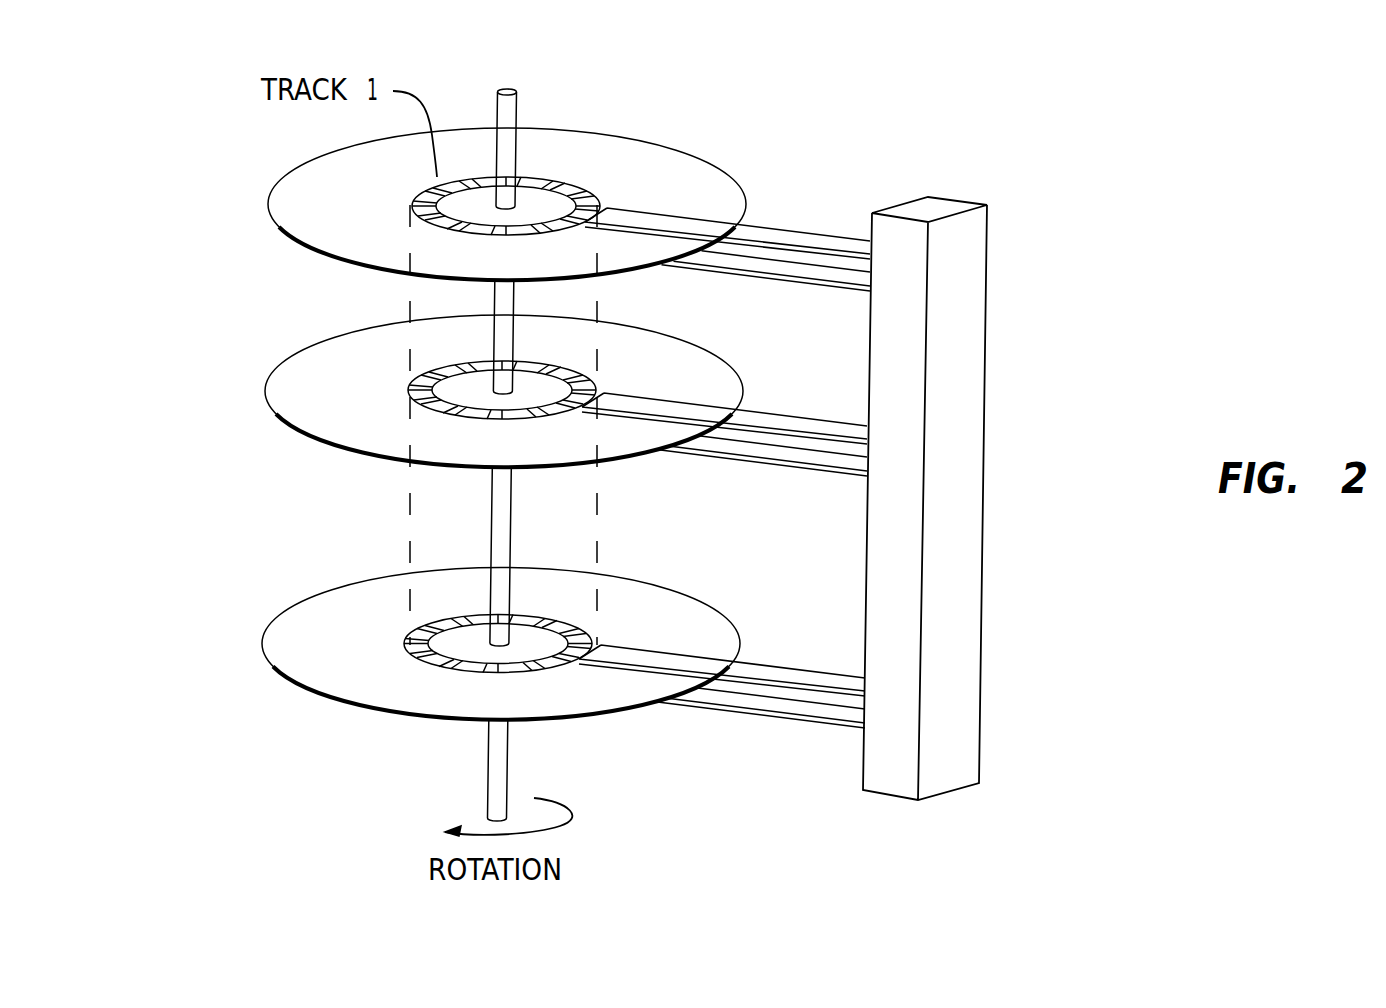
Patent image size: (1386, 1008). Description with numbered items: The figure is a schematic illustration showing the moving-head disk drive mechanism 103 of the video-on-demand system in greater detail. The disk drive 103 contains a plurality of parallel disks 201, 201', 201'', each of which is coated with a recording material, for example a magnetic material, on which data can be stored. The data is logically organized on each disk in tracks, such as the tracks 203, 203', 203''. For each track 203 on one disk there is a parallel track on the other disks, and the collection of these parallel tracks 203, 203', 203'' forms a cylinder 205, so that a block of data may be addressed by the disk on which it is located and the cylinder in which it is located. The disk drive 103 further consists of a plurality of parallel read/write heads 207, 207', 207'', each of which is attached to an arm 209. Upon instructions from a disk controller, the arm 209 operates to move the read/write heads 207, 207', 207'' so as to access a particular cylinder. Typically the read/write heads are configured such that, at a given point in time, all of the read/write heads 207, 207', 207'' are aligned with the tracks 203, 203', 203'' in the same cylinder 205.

The moving-head disk drive mechanism 103 is at (1205, 98).
The disk 201 is at (429, 200).
The disk 201' is at (427, 391).
The disk 201'' is at (422, 639).
The track 203 is at (551, 161).
The track 203' is at (427, 350).
The track 203'' is at (455, 702).
The cylinder 205 is at (407, 540).
The read/write head 207 is at (727, 206).
The read/write head 207' is at (724, 388).
The read/write head 207'' is at (722, 636).
The arm 209 is at (970, 518).